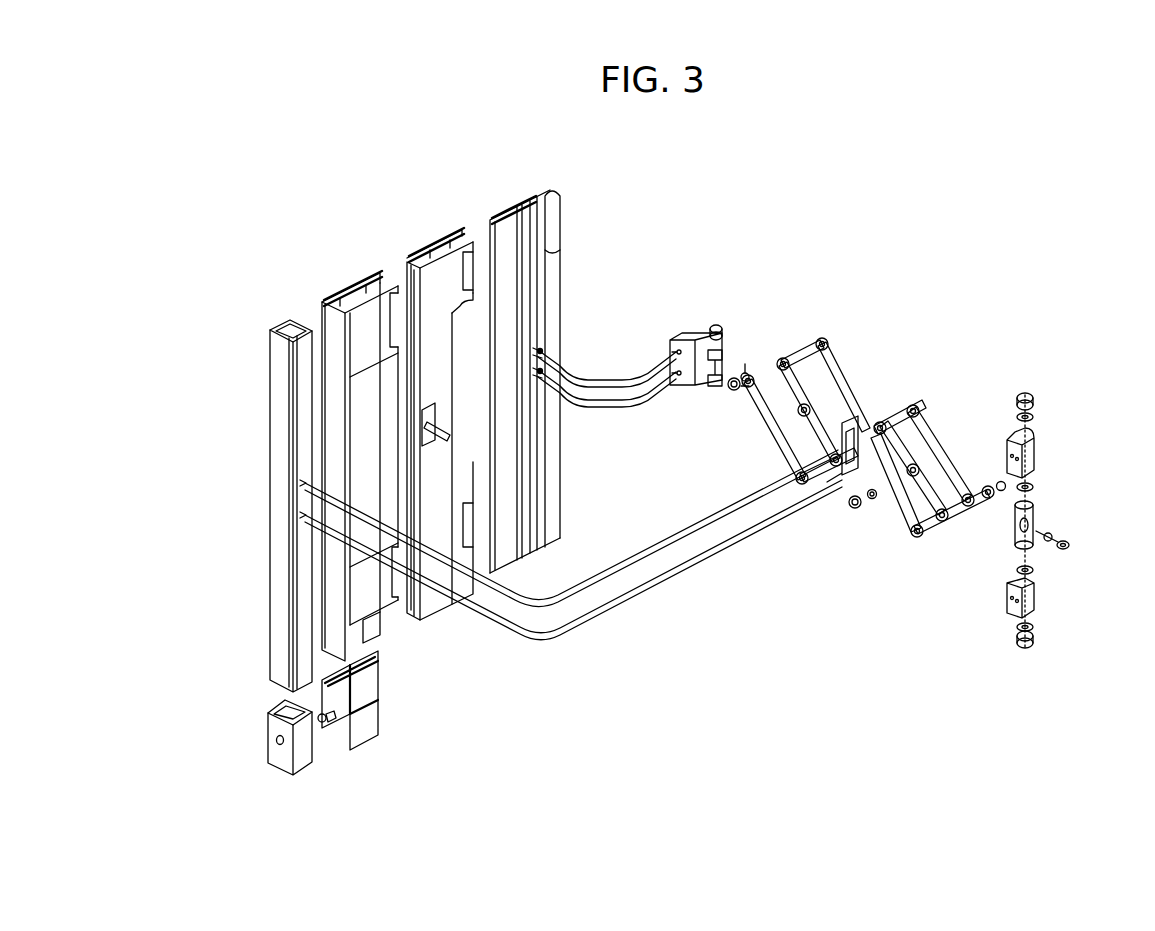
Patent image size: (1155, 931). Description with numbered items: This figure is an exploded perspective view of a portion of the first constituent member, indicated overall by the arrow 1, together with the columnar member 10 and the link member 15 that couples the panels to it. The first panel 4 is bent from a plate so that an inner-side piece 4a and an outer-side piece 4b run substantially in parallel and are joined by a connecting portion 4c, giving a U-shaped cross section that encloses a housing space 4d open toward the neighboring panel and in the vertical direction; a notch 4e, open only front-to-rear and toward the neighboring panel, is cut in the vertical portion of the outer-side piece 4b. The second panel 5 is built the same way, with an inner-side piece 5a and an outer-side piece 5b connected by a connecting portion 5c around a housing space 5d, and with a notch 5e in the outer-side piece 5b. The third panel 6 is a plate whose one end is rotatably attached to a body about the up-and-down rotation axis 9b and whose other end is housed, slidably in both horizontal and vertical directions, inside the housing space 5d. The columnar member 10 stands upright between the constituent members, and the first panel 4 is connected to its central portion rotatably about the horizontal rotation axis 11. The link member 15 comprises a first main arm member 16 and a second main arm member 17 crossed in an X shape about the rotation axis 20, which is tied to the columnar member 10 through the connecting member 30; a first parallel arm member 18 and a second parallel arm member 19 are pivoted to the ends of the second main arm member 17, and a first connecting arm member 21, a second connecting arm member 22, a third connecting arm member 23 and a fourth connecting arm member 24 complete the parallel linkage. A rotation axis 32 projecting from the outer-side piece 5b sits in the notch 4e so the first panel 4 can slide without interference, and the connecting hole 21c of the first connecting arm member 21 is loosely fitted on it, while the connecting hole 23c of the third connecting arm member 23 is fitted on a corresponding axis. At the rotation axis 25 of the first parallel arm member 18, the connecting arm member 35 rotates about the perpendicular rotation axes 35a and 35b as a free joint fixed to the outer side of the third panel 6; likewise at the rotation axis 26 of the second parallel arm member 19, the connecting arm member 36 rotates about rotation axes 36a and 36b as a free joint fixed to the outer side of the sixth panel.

The door opening/closing device 1 is at (550, 170).
The first panel 4 is at (347, 276).
The inner-side piece 4a is at (330, 297).
The outer-side piece 4b is at (384, 350).
The connecting portion 4c is at (327, 335).
The housing space 4d is at (376, 280).
The notch 4e is at (375, 464).
The second panel 5 is at (432, 238).
The inner-side piece 5a is at (413, 255).
The outer-side piece 5b is at (452, 313).
The connecting portion 5c is at (408, 400).
The housing space 5d is at (456, 236).
The notch 5e is at (462, 430).
The third panel 6 is at (510, 232).
The rotation axis 9b is at (553, 272).
The columnar member 10 is at (268, 441).
The rotation axis 11 is at (324, 732).
The link member 15 is at (880, 390).
The first main arm member 16 is at (828, 472).
The second main arm member 17 is at (838, 374).
The first parallel arm member 18 is at (798, 352).
The second parallel arm member 19 is at (930, 523).
The rotation axis 20 is at (464, 430).
The first connecting arm member 21 is at (792, 387).
The connecting hole 21c is at (810, 409).
The second connecting arm member 22 is at (782, 443).
The third connecting arm member 23 is at (930, 494).
The connecting hole 23c is at (907, 478).
The fourth connecting arm member 24 is at (932, 432).
The rotation axis 25 is at (728, 386).
The rotation axis 26 is at (966, 506).
The connecting member 30 is at (855, 510).
The rotation axis 32 is at (442, 424).
The connecting arm member 35 is at (693, 338).
The rotation axis 35a is at (746, 372).
The rotation axis 35b is at (720, 326).
The connecting arm member 36 is at (1042, 462).
The rotation axis 36a is at (992, 507).
The rotation axis 36b is at (1030, 548).